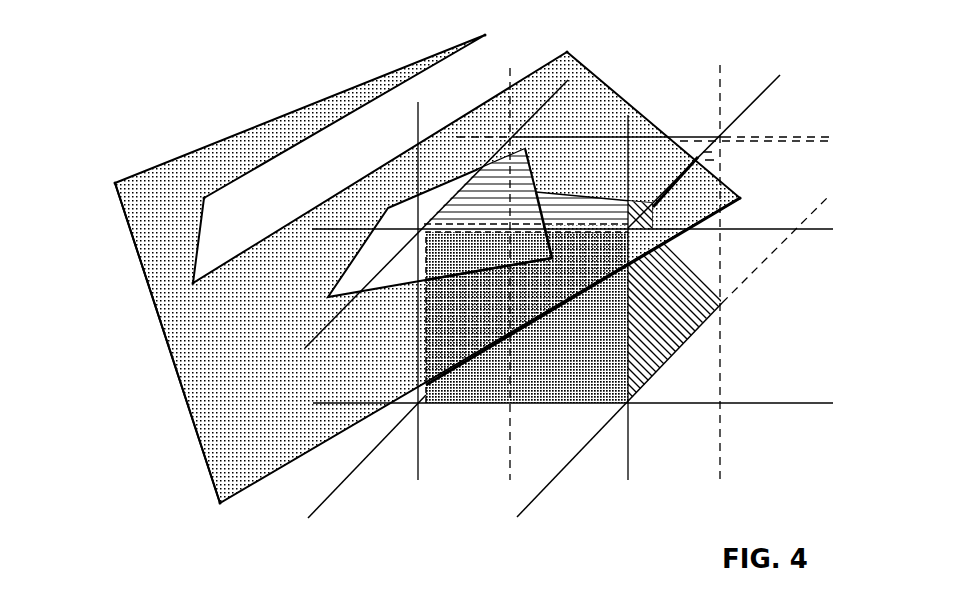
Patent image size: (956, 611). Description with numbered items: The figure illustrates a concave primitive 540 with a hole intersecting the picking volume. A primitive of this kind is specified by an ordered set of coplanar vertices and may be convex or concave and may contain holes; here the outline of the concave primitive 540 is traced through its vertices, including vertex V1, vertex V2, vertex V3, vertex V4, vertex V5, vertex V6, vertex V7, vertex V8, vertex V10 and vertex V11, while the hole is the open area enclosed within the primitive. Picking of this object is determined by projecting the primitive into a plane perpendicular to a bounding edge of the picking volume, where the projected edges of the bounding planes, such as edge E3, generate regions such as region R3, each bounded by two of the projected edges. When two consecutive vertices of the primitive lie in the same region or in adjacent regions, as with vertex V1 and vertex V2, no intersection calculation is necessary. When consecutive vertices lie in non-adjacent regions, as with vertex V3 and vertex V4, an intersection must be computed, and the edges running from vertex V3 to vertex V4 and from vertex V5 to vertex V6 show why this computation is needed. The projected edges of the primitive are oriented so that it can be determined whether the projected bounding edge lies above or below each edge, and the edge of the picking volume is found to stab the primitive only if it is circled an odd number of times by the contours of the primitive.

The concave primitive 540 is at (347, 88).
The vertex V1 is at (500, 28).
The vertex V2 is at (229, 200).
The vertex V3 is at (213, 294).
The vertex V4 is at (593, 50).
The vertex V5 is at (753, 184).
The vertex V6 is at (249, 505).
The vertex V7 is at (127, 159).
The vertex V8 is at (466, 241).
The vertex V10 is at (643, 127).
The vertex V11 is at (437, 223).
The edge E3 is at (163, 343).
The region R3 is at (427, 269).